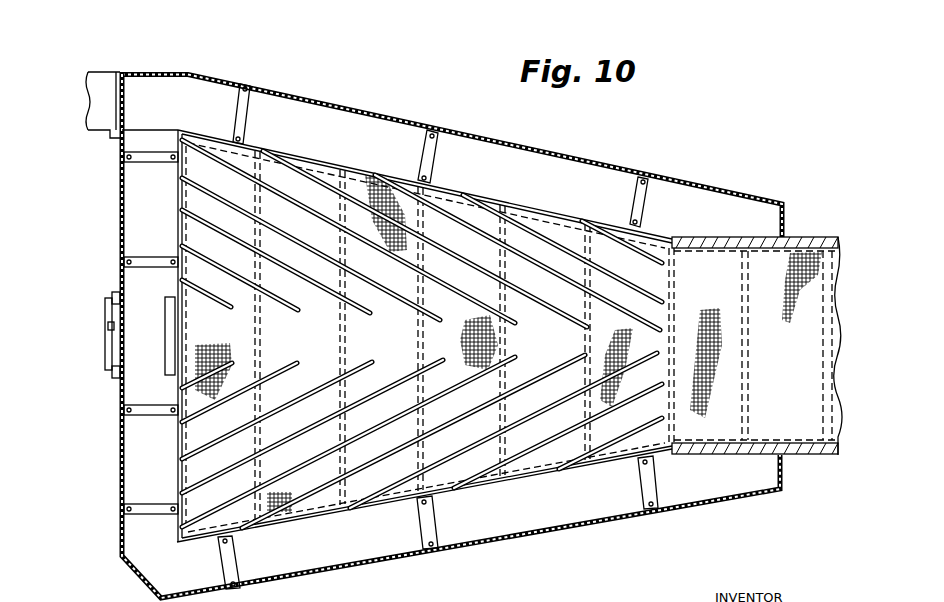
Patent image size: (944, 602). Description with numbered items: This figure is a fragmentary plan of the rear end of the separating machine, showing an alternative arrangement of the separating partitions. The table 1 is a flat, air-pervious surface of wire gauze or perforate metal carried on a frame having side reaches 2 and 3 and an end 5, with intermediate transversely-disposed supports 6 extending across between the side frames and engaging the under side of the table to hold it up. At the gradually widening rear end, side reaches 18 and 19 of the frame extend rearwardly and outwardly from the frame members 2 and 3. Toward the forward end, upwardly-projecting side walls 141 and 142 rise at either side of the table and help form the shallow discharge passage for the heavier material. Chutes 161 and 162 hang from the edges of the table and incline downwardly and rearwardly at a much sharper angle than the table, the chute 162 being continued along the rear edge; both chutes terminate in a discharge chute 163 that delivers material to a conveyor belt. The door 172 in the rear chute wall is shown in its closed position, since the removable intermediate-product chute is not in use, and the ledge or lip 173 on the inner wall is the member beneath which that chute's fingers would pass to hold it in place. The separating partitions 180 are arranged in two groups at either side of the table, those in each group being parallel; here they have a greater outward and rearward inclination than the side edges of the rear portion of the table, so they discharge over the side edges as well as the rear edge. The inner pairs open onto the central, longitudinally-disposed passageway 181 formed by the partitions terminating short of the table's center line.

The table 1 is at (547, 433).
The side reach of frame 2 is at (707, 252).
The side reach of frame 3 is at (693, 437).
The end of frame 5 is at (180, 228).
The intermediate transversely-disposed support 6 is at (580, 300).
The side reach of rear frame 18 is at (455, 192).
The side reach of rear frame 19 is at (452, 486).
The upwardly-projecting side wall 141 is at (760, 219).
The upwardly-projecting side wall 142 is at (717, 452).
The chute 161 is at (483, 148).
The chute 162 is at (133, 452).
The discharge chute 163 is at (105, 86).
The door 172 is at (112, 322).
The ledge or lip 173 is at (166, 316).
The separating partitions 180 is at (365, 362).
The central longitudinally-disposed passageway 181 is at (523, 342).